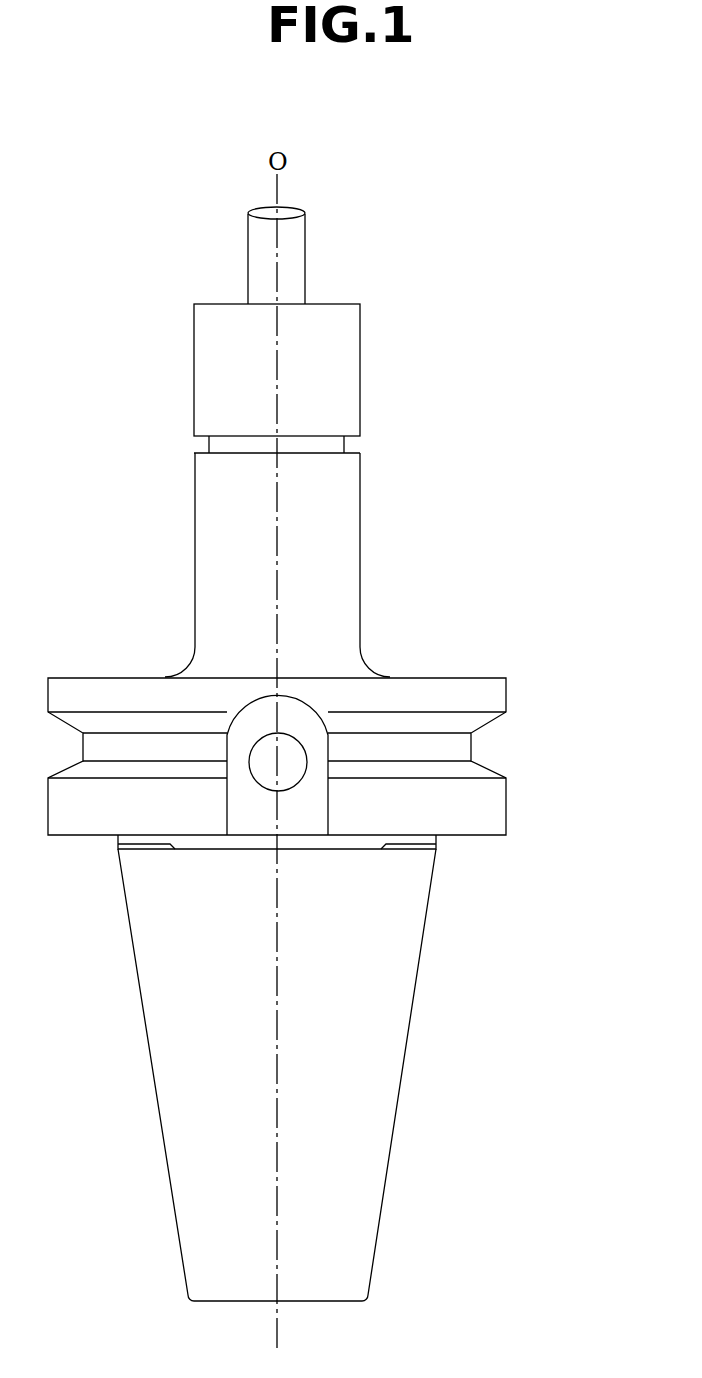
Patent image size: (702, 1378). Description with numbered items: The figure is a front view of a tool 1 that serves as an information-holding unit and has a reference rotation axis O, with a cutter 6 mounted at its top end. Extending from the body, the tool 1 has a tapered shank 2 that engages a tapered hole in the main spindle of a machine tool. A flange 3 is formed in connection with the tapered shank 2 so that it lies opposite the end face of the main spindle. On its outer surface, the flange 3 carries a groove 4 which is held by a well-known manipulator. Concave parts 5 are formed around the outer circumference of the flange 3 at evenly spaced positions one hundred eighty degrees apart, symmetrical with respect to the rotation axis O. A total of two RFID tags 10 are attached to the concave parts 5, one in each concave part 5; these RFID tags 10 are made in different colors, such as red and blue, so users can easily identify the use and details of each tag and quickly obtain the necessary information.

The tool 1 is at (549, 326).
The tapered shank 2 is at (403, 1082).
The flange 3 is at (497, 808).
The groove 4 is at (471, 747).
The concave part 5 is at (317, 806).
The cutter 6 is at (296, 255).
The RFID tag 10 is at (292, 750).